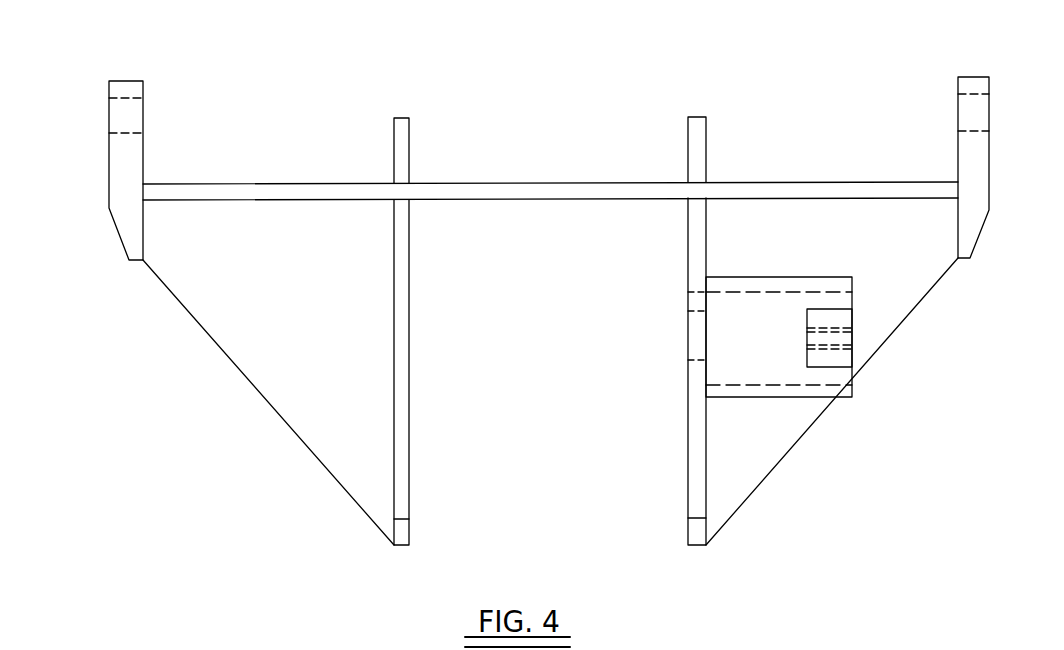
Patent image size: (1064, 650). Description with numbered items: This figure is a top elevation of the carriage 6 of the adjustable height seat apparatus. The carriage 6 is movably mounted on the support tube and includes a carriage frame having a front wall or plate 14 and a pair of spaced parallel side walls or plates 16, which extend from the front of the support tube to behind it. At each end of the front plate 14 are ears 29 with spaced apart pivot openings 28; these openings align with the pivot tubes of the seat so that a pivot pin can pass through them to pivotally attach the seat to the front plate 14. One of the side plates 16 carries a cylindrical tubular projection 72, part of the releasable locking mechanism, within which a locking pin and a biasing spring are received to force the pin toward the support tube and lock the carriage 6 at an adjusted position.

The carriage 6 is at (923, 329).
The front wall or plate 14 is at (512, 191).
The side walls or plates 16 is at (402, 341).
The pivot openings 28 is at (135, 132).
The ears 29 is at (128, 90).
The cylindrical tubular projection 72 is at (782, 393).